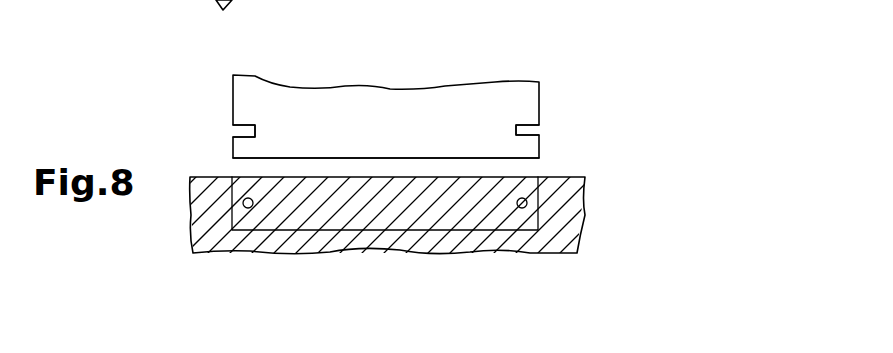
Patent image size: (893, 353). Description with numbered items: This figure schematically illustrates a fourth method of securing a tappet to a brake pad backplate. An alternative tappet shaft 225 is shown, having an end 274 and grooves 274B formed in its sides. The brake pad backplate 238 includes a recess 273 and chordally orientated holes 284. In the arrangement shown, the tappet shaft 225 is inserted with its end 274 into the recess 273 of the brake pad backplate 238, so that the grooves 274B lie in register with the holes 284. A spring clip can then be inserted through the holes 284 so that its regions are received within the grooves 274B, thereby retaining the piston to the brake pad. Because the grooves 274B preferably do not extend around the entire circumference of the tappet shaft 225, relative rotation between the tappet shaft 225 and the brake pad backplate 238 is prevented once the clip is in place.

The tappet shaft 225 is at (540, 100).
The brake pad backplate 238 is at (557, 205).
The recess 273 is at (397, 207).
The end 274 is at (290, 158).
The grooves 274B is at (244, 130).
The holes 284 is at (243, 203).